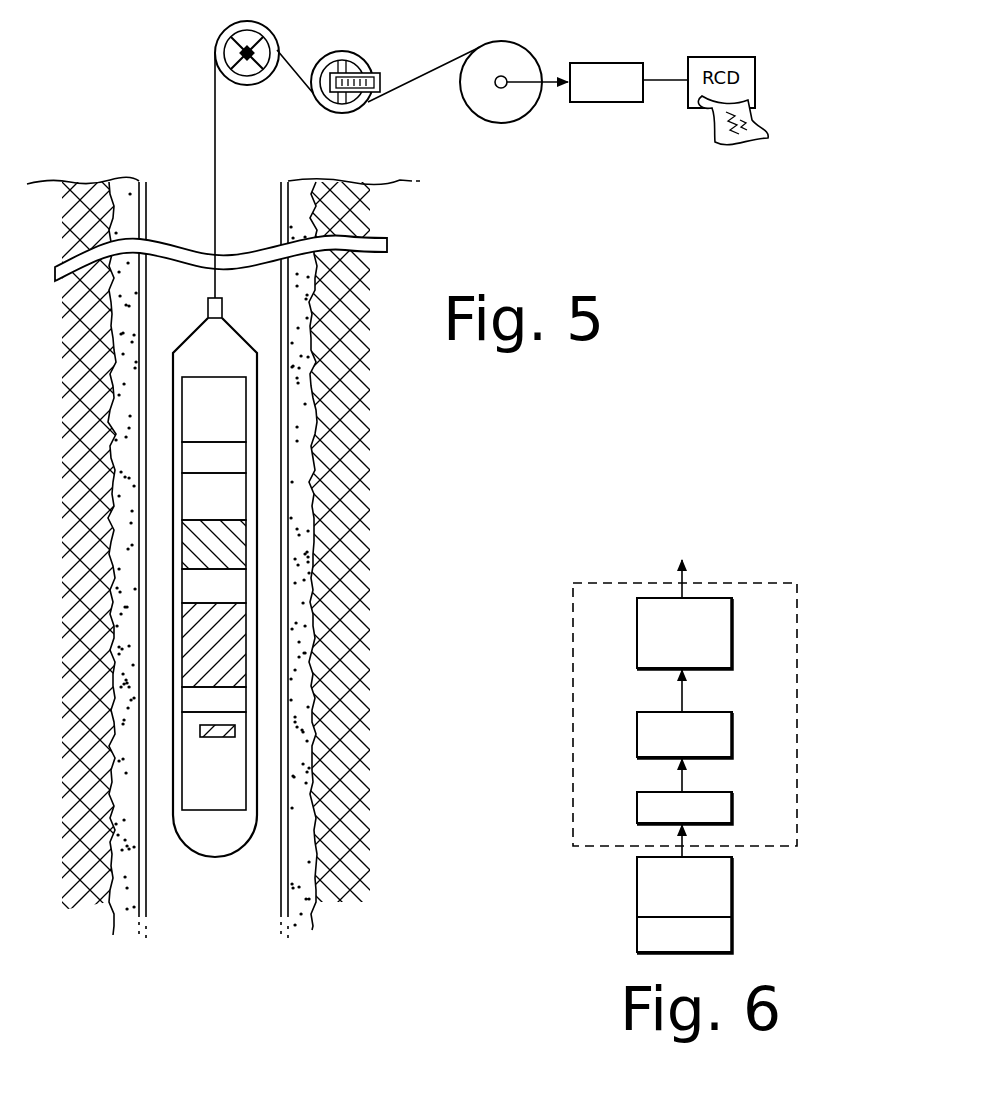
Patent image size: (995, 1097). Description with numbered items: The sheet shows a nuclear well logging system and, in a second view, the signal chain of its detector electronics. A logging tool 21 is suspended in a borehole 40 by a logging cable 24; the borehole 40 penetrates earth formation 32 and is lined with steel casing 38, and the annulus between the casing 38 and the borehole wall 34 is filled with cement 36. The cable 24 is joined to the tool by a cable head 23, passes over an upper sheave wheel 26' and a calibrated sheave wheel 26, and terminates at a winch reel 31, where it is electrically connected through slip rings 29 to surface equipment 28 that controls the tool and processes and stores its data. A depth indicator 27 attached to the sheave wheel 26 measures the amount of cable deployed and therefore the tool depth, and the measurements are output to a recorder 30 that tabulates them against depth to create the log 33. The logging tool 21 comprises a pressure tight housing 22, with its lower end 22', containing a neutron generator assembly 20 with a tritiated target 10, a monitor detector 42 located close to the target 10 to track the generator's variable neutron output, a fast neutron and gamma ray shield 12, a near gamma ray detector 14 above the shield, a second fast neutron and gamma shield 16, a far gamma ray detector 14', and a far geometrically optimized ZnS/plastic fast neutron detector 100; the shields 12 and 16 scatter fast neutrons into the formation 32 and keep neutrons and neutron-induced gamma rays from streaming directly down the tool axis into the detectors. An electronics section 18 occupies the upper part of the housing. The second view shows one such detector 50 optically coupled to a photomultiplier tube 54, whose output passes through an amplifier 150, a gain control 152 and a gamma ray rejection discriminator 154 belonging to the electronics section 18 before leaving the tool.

In FIG. 5, the tritiated target 10 is at (200, 732).
In FIG. 5, the fast neutron and gamma ray shield 12 is at (203, 637).
In FIG. 5, the near gamma ray detector 14 is at (157, 598).
In FIG. 5, the far gamma ray detector 14' is at (272, 443).
In FIG. 5, the fast neutron and gamma shield 16 is at (230, 540).
In FIG. 5, the electronics section 18 is at (197, 393).
In FIG. 6, the electronics section 18 is at (610, 847).
In FIG. 5, the neutron generator assembly 20 is at (237, 762).
In FIG. 5, the logging tool 21 is at (262, 405).
In FIG. 5, the pressure tight housing 22 is at (206, 572).
In FIG. 5, the tool housing bottom 22' is at (203, 876).
In FIG. 5, the cable head 23 is at (223, 307).
In FIG. 5, the logging cable 24 is at (216, 167).
In FIG. 5, the calibrated sheave wheel 26 is at (361, 62).
In FIG. 5, the upper sheave wheel 26' is at (217, 67).
In FIG. 5, the depth indicator 27 is at (380, 76).
In FIG. 5, the surface equipment 28 is at (603, 63).
In FIG. 5, the electrical slip rings 29 is at (497, 88).
In FIG. 5, the recorder 30 is at (690, 88).
In FIG. 5, the winch reel 31 is at (510, 53).
In FIG. 5, the earth formation 32 is at (96, 577).
In FIG. 5, the log 33 is at (717, 133).
In FIG. 5, the borehole wall 34 is at (117, 328).
In FIG. 5, the cement 36 is at (123, 482).
In FIG. 5, the casing 38 is at (141, 384).
In FIG. 5, the borehole 40 is at (240, 246).
In FIG. 5, the monitor detector 42 is at (240, 702).
In FIG. 6, the detector 50 is at (727, 940).
In FIG. 6, the PM tube 54 is at (727, 897).
In FIG. 5, the fast neutron detector 100 is at (235, 512).
In FIG. 6, the amplifier 150 is at (733, 808).
In FIG. 6, the gain control 152 is at (637, 747).
In FIG. 6, the gamma rejection discriminator 154 is at (735, 628).